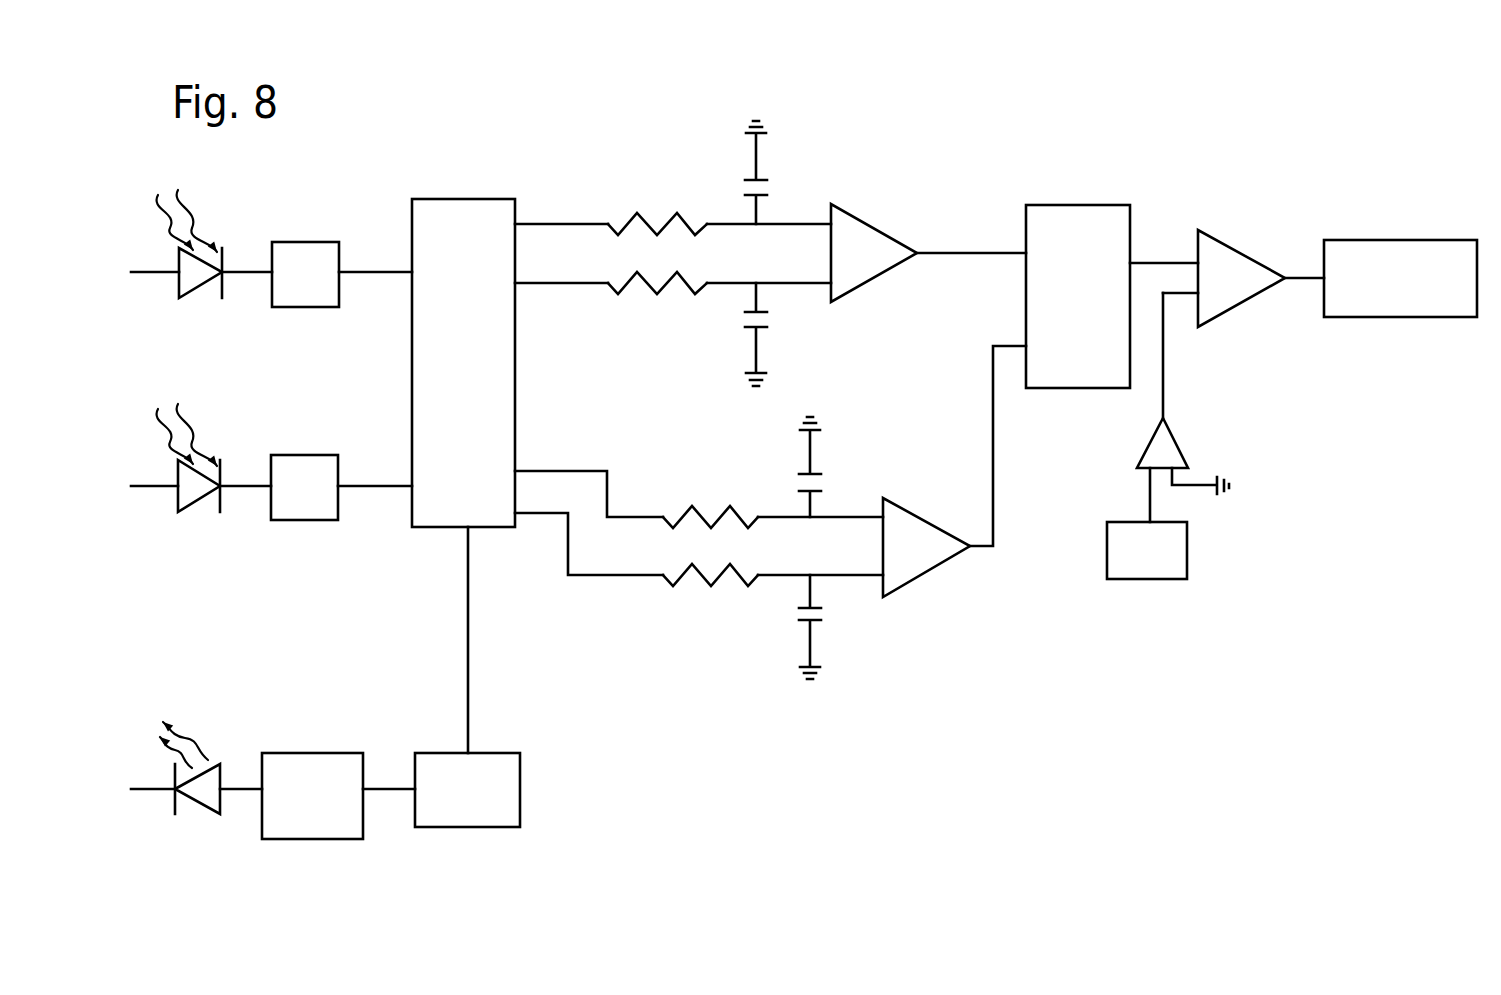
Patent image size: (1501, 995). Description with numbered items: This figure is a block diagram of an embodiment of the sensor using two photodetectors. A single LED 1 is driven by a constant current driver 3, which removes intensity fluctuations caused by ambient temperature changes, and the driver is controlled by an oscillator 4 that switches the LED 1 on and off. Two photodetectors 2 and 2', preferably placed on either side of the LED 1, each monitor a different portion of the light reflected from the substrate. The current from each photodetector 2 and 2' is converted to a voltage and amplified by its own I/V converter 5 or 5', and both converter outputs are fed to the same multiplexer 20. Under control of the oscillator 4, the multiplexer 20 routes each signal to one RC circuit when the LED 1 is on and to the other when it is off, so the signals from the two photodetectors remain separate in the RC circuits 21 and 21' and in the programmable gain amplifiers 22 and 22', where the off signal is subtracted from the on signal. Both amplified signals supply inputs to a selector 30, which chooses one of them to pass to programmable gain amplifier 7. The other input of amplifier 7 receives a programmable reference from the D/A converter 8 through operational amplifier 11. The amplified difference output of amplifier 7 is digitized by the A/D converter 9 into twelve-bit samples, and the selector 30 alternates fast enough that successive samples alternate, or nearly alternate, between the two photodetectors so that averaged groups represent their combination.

The LED 1 is at (208, 788).
The photodetector 2 is at (201, 494).
The photodetector 2' is at (201, 281).
The constant current driver 3 is at (350, 818).
The oscillator 4 is at (510, 805).
The I/V converter 5 is at (341, 470).
The I/V converter 5' is at (342, 256).
The programmable gain amplifier 7 is at (1245, 268).
The D/A converter 8 is at (1167, 570).
The A/D converter 9 is at (1365, 255).
The operational amplifier 11 is at (1167, 450).
The multiplexer 20 is at (495, 212).
The RC network 21 is at (742, 548).
The RC circuit 21' is at (687, 253).
The programmable gain amplifier 22 is at (954, 471).
The programmable gain amplifier 22' is at (928, 251).
The selector 30 is at (1107, 223).